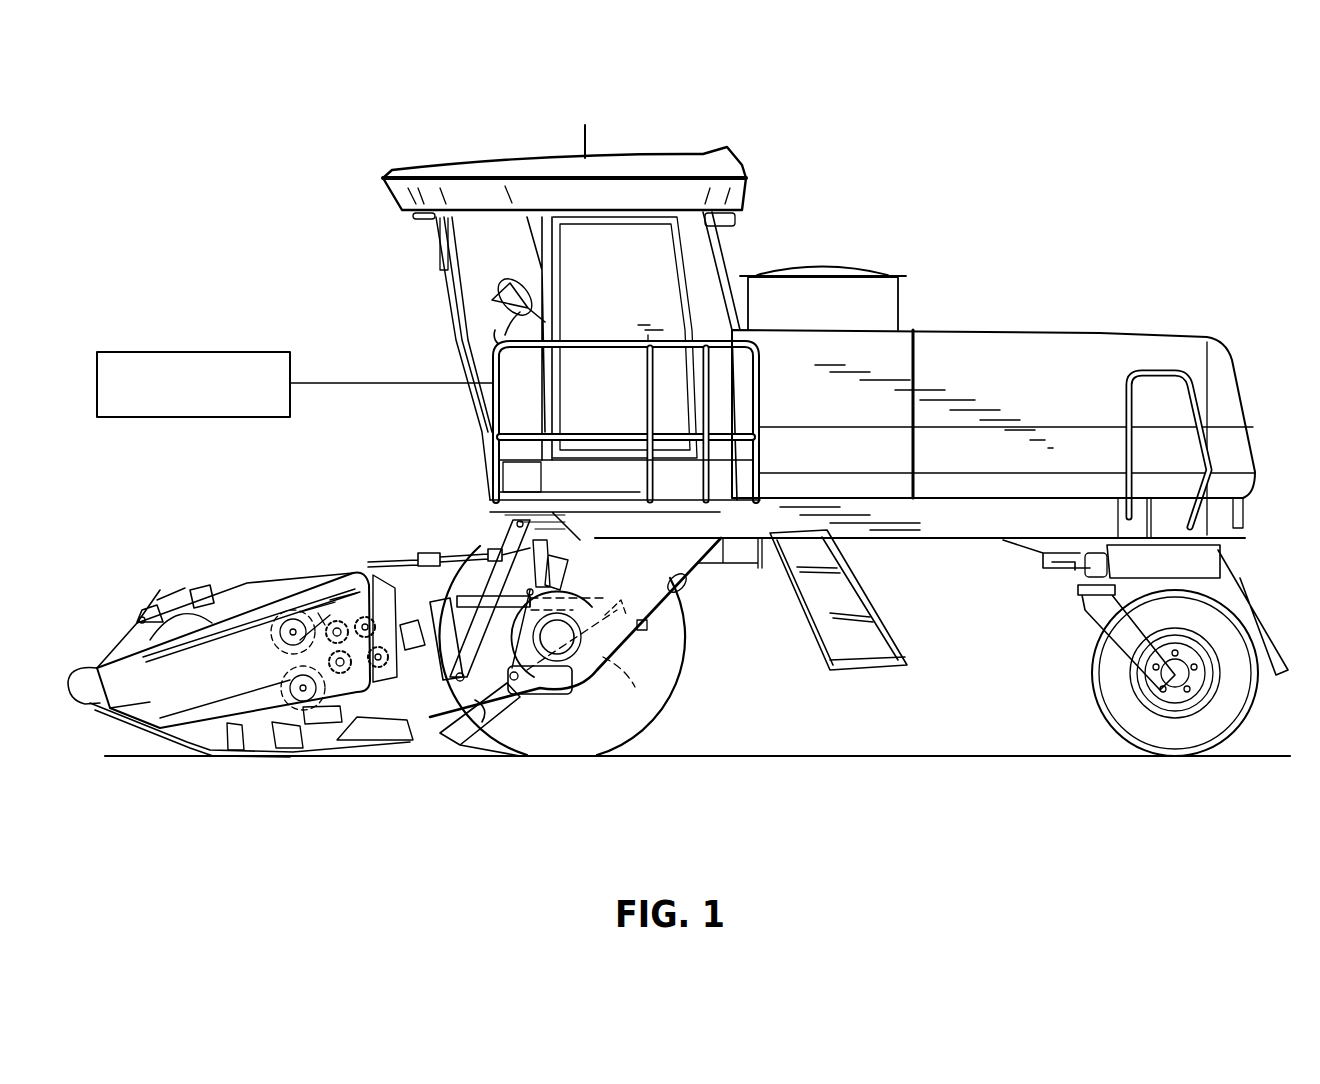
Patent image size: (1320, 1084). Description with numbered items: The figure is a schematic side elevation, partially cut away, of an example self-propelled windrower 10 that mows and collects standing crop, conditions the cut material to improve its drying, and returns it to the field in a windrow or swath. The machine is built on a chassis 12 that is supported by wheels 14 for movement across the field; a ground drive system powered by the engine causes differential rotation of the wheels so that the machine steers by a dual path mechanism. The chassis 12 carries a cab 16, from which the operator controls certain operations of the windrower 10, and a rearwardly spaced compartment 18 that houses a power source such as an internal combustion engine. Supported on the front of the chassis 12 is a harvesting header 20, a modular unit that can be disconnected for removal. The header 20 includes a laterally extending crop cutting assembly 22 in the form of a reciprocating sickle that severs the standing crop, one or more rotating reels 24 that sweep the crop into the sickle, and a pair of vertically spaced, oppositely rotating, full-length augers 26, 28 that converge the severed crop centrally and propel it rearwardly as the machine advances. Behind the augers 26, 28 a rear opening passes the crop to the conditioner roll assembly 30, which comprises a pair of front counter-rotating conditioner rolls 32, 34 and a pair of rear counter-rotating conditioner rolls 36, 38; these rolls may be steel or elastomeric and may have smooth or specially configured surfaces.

The windrower 10 is at (1068, 184).
The chassis 12 is at (897, 540).
The wheels 14 is at (680, 655).
The cab 16 is at (570, 332).
The compartment 18 is at (1005, 330).
The harvesting header 20 is at (243, 538).
The crop cutting assembly 22 is at (240, 757).
The rotating reel 24 is at (158, 590).
The auger 26 is at (273, 635).
The auger 28 is at (285, 688).
The conditioner roll assembly 30 is at (345, 600).
The front conditioner roll 32 is at (318, 612).
The front conditioner roll 34 is at (320, 660).
The rear conditioner roll 36 is at (408, 575).
The rear conditioner roll 38 is at (395, 680).